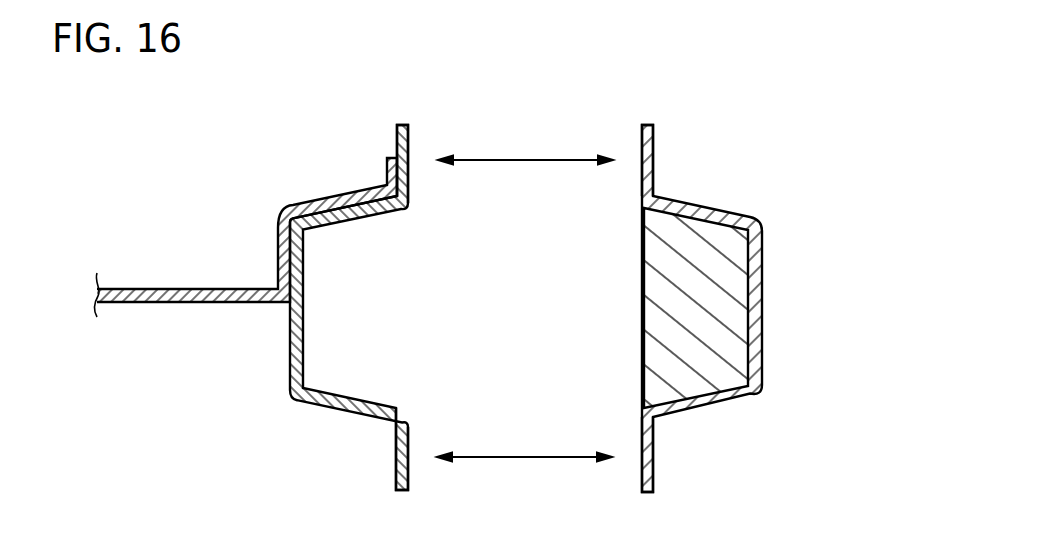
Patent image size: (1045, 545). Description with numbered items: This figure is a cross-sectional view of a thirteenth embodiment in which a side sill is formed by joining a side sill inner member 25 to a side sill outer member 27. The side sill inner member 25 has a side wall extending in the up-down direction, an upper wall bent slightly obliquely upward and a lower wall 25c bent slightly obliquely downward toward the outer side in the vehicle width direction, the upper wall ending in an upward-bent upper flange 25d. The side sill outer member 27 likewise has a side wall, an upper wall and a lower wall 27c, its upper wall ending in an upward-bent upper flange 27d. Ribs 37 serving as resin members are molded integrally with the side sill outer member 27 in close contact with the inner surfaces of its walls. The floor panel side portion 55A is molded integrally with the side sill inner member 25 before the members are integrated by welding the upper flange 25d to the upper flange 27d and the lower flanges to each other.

The side sill inner member 25 is at (290, 385).
The lower wall 25c is at (401, 466).
The upper flange 25d is at (403, 140).
The side sill outer member 27 is at (762, 356).
The lower wall 27c is at (648, 468).
The upper flange 27d is at (648, 166).
The ribs 37 is at (655, 305).
The floor panel side portion 55A is at (128, 303).